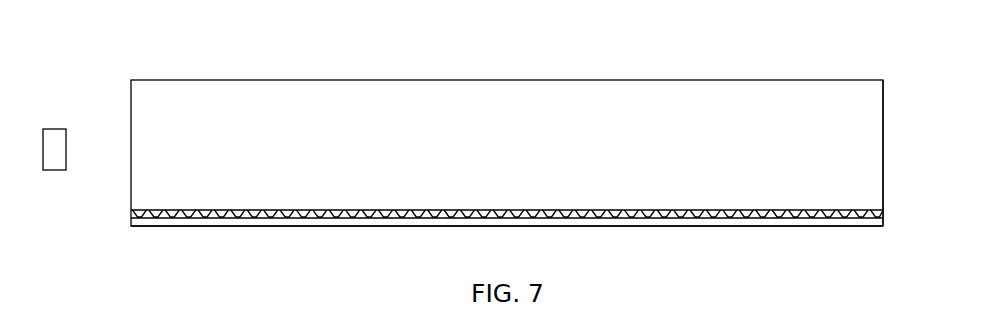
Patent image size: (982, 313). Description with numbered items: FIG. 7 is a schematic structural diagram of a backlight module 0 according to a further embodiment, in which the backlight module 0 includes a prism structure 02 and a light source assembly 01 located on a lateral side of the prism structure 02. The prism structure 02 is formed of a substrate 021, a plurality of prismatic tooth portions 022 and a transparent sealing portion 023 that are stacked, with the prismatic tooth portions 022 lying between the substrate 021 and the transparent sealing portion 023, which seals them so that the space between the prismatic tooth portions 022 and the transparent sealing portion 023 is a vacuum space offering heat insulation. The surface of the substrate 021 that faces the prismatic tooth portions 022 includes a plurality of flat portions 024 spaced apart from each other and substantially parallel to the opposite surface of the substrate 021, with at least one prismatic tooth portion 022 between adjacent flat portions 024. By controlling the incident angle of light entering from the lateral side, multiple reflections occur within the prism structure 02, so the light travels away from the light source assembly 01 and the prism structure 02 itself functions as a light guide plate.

The backlight module 0 is at (490, 143).
The light source assembly 01 is at (67, 138).
The prism structure 02 is at (816, 80).
The substrate 021 is at (863, 168).
The prismatic tooth portions 022 is at (327, 217).
The transparent sealing portion 023 is at (780, 224).
The flat portions 024 is at (615, 218).